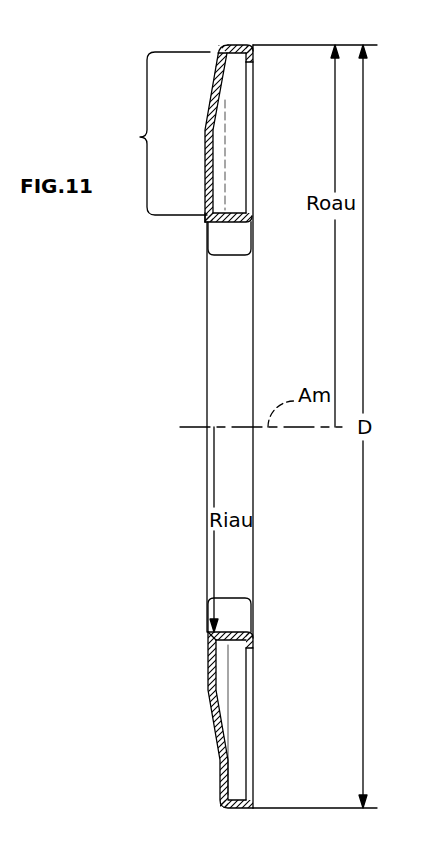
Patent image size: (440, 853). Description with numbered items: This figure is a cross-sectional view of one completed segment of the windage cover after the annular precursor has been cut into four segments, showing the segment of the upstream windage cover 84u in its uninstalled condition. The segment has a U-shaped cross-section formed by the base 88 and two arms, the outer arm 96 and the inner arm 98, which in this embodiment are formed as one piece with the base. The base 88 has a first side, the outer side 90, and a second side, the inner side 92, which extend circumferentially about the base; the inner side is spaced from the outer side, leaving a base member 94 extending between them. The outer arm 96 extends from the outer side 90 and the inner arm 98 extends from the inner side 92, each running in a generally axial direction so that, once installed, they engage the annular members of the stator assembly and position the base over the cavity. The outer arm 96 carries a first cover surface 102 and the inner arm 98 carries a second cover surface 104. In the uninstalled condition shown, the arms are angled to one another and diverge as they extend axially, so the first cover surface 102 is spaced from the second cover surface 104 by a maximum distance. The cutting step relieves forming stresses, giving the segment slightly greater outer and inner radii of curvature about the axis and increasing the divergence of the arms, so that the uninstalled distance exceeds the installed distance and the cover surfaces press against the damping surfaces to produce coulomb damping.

The segment of the upstream windage cover in the uninstalled condition 84u is at (266, 615).
The base 88 is at (207, 118).
The outer side 90 is at (222, 45).
The inner side 92 is at (207, 225).
The base member 94 is at (157, 133).
The outer arm 96 is at (240, 52).
The inner arm 98 is at (233, 212).
The first cover surface 102 is at (238, 45).
The second cover surface 104 is at (230, 239).